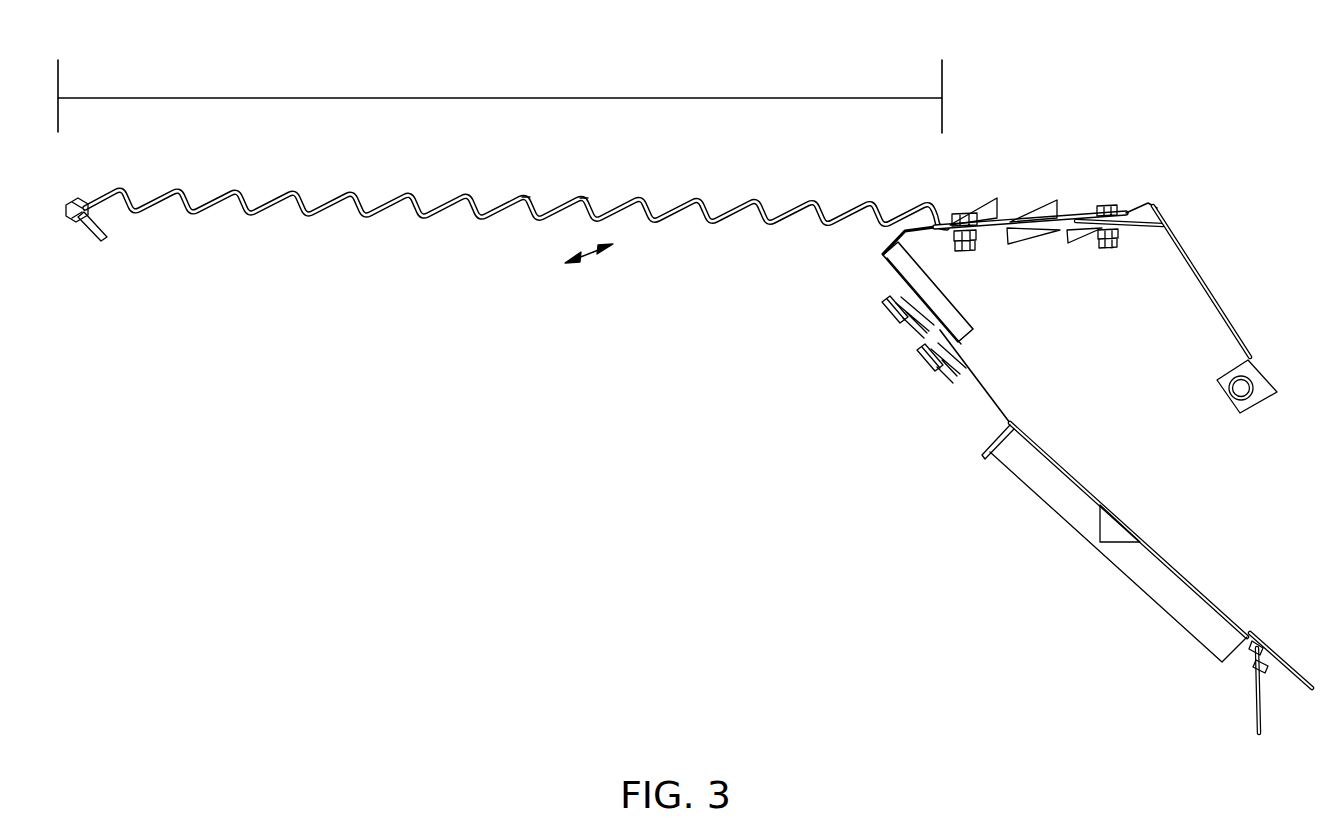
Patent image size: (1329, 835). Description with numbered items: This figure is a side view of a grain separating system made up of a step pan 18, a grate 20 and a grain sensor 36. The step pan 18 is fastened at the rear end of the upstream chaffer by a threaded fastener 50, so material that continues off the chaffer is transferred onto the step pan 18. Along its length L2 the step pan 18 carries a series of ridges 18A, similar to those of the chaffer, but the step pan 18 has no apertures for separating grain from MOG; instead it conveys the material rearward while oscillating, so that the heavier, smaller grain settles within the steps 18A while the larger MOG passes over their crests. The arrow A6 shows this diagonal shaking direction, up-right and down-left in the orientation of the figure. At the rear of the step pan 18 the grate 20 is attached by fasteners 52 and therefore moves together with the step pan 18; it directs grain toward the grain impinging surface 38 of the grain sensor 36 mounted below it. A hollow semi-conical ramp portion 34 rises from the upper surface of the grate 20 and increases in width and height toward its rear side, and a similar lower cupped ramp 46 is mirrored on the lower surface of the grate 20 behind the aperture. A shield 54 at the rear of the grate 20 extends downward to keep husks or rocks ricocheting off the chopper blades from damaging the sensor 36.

The length of the step pan L2 is at (512, 97).
The step pan 18 is at (383, 214).
The ridges 18A is at (583, 194).
The arrow A6 is at (590, 259).
The threaded fastener 50 is at (86, 229).
The grate 20 is at (1047, 256).
The fasteners 52 is at (965, 212).
The ramp portion 34 is at (1032, 201).
The lower cupped ramp 46 is at (1018, 244).
The shield 54 is at (1215, 293).
The grain impinging surface 38 is at (943, 296).
The grain sensor 36 is at (905, 288).